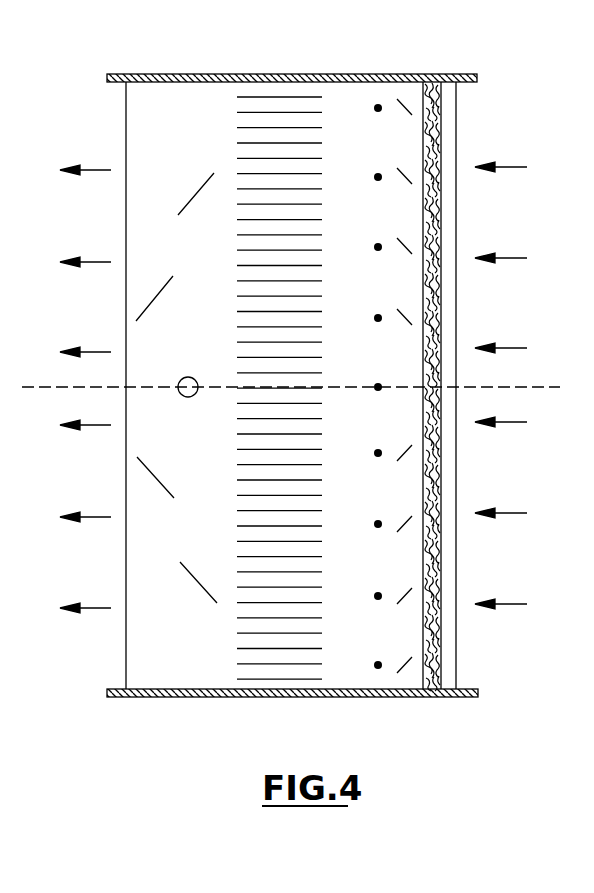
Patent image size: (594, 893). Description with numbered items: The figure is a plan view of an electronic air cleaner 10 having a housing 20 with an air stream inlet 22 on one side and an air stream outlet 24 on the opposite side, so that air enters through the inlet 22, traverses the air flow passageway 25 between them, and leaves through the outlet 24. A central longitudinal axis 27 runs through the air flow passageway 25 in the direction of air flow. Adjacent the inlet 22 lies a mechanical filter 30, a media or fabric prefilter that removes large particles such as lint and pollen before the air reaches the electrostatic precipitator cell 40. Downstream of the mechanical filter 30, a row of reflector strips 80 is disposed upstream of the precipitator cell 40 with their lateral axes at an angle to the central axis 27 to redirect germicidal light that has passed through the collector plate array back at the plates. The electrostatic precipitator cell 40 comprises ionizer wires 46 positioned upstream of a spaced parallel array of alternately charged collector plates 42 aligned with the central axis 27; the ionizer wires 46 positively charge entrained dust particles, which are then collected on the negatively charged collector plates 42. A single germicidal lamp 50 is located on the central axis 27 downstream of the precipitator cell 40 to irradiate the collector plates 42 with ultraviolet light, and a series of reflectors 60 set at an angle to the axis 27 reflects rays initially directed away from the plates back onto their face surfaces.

The electronic air cleaner 10 is at (516, 105).
The housing 20 is at (180, 699).
The air stream inlet 22 is at (457, 666).
The air stream outlet 24 is at (126, 650).
The air flow passageway 25 is at (393, 574).
The central longitudinal axis 27 is at (530, 387).
The mechanical filter 30 is at (440, 138).
The electrostatic precipitator cell 40 is at (353, 100).
The collector plates 42 is at (305, 153).
The ionizer wires 46 is at (379, 315).
The germicidal lamp 50 is at (195, 377).
The reflectors 60 is at (202, 188).
The reflector strips 80 is at (404, 452).